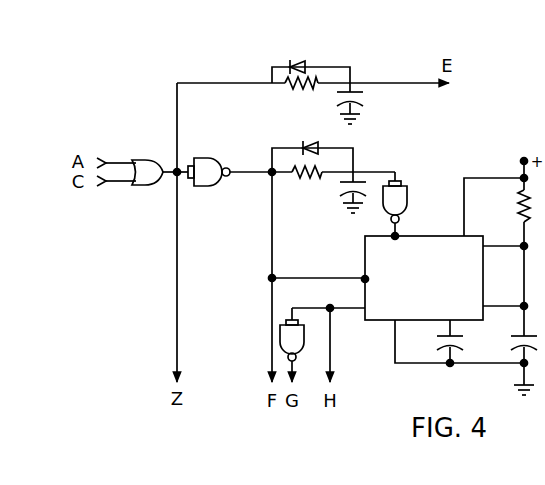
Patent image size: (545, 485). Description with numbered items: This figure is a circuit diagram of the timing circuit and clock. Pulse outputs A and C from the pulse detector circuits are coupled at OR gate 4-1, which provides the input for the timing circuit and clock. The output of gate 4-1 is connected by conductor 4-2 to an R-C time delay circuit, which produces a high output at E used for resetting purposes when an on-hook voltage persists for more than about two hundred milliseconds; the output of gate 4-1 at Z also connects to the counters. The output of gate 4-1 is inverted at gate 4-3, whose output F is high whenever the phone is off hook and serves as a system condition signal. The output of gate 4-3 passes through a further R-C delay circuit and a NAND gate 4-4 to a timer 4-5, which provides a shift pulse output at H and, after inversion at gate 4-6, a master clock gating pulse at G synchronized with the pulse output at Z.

The OR gate 4-1 is at (145, 160).
The conductor 4-2 is at (207, 83).
The gate 4-3 is at (213, 159).
The inverter 4-4 is at (407, 191).
The timer 4-5 is at (424, 278).
The gate 4-6 is at (284, 330).